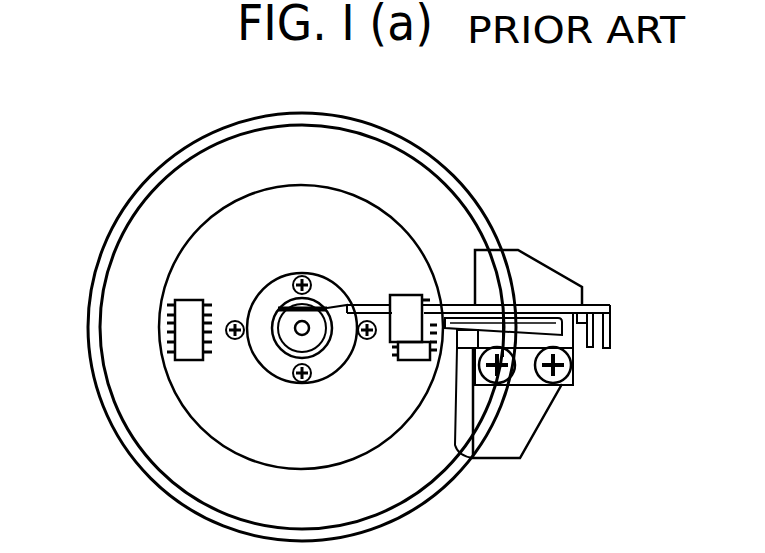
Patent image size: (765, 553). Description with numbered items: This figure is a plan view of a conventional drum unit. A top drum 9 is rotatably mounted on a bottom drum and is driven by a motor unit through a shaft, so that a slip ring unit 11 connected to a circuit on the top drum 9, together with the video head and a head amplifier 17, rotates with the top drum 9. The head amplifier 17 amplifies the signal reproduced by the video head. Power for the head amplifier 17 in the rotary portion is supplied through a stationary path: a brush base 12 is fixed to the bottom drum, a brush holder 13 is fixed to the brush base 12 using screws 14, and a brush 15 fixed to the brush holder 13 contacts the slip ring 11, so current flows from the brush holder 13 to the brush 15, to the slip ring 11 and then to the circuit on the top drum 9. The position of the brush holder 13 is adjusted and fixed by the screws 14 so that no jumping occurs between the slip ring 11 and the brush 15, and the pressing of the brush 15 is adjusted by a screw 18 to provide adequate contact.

The top drum 9 is at (413, 150).
The slip ring unit 11 is at (278, 313).
The brush base 12 is at (513, 270).
The brush holder 13 is at (543, 308).
The screws 14 is at (562, 384).
The brush 15 is at (347, 303).
The head amplifier 17 is at (183, 350).
The screw 18 is at (462, 452).